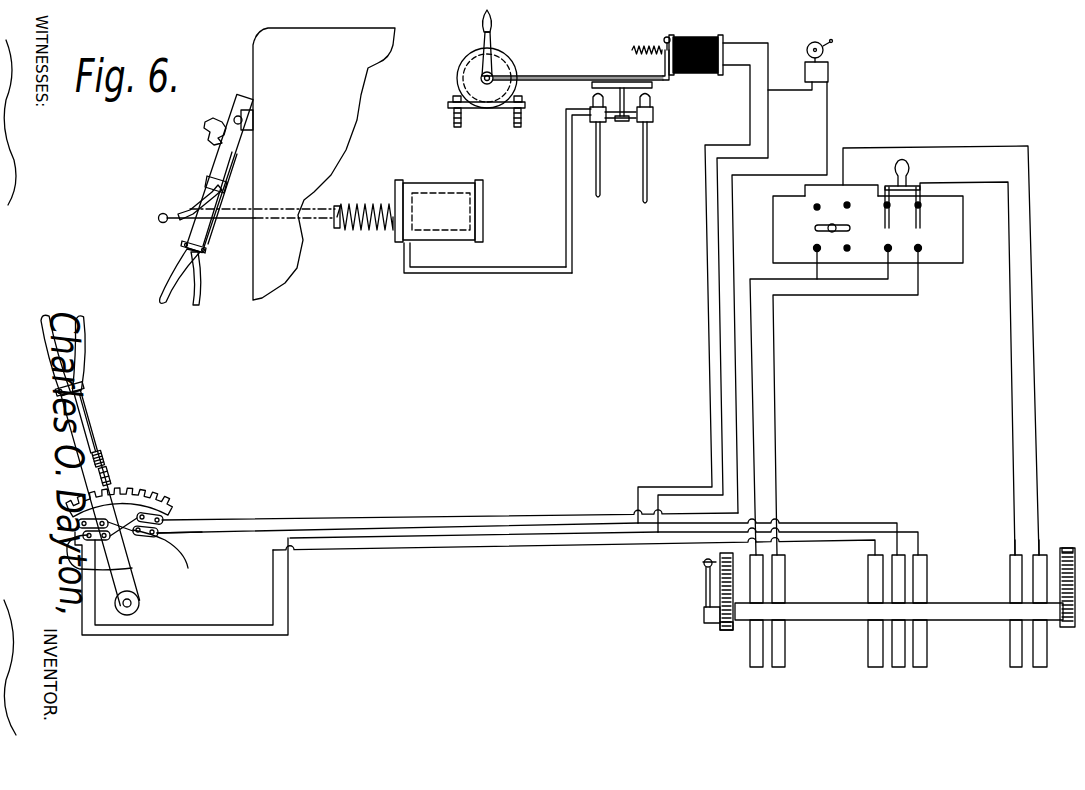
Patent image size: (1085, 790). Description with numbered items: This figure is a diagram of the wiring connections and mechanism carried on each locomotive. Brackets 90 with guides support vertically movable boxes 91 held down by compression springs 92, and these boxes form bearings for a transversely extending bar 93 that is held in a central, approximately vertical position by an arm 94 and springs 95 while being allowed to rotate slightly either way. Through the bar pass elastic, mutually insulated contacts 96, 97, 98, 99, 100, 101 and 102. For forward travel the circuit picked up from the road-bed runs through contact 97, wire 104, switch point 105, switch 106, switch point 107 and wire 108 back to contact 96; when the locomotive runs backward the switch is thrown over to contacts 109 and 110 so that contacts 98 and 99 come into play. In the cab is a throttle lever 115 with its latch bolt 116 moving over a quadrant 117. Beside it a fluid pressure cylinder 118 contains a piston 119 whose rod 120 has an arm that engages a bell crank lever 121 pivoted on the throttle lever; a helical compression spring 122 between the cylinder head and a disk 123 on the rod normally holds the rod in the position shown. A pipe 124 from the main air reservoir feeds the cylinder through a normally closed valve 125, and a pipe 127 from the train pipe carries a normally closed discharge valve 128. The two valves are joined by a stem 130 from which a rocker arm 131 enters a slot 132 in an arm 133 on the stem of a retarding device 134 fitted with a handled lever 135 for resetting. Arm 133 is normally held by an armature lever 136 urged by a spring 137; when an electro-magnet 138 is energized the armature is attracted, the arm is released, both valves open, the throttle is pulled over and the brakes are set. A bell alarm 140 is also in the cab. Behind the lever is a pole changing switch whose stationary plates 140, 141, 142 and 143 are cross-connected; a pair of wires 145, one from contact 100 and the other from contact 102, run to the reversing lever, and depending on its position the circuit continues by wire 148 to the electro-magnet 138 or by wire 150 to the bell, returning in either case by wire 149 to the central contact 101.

The bracket 90 is at (1063, 546).
The vertically movable box 91 is at (718, 628).
The compression spring 92 is at (1030, 550).
The transversely extending bar 93 is at (958, 603).
The arm 94 is at (702, 588).
The spring 95 is at (704, 558).
The contact 96 is at (1017, 667).
The contact 97 is at (1040, 667).
The contact 98 is at (753, 658).
The contact 99 is at (777, 667).
The contact 100 is at (922, 667).
The central traveling contact 101 is at (900, 667).
The contact 102 is at (868, 648).
The wire 104 is at (1011, 367).
The switch point 105 is at (920, 208).
The switch 106 is at (903, 244).
The switch point 107 is at (886, 207).
The wire 108 is at (862, 185).
The contact 109 is at (893, 252).
The contact 110 is at (922, 250).
The throttle lever 115 is at (210, 170).
The latch bolt 116 is at (247, 165).
The quadrant 117 is at (205, 130).
The fluid pressure cylinder 118 is at (477, 180).
The piston 119 is at (426, 192).
The rod 120 is at (310, 188).
The bell crank lever 121 is at (190, 210).
The helical compression spring 122 is at (360, 225).
The disk 123 is at (330, 222).
The pipe 124 is at (567, 200).
The valve 125 is at (592, 110).
The pipe 127 is at (648, 190).
The discharge valve 128 is at (655, 115).
The stem 130 is at (632, 115).
The rocker arm 131 is at (586, 71).
The slot 132 is at (645, 88).
The arm 133 is at (545, 75).
The retarding device 134 is at (494, 75).
The handled lever 135 is at (483, 38).
The armature lever 136 is at (670, 37).
The spring 137 is at (637, 45).
The electro-magnet 138 is at (712, 38).
The alarm 140 is at (829, 80).
The contact plate 141 is at (112, 558).
The contact plate 142 is at (153, 512).
The contact plate 143 is at (197, 592).
The wire 145 is at (363, 540).
The wire 148 is at (202, 534).
The wire 149 is at (823, 520).
The wire 150 is at (337, 505).